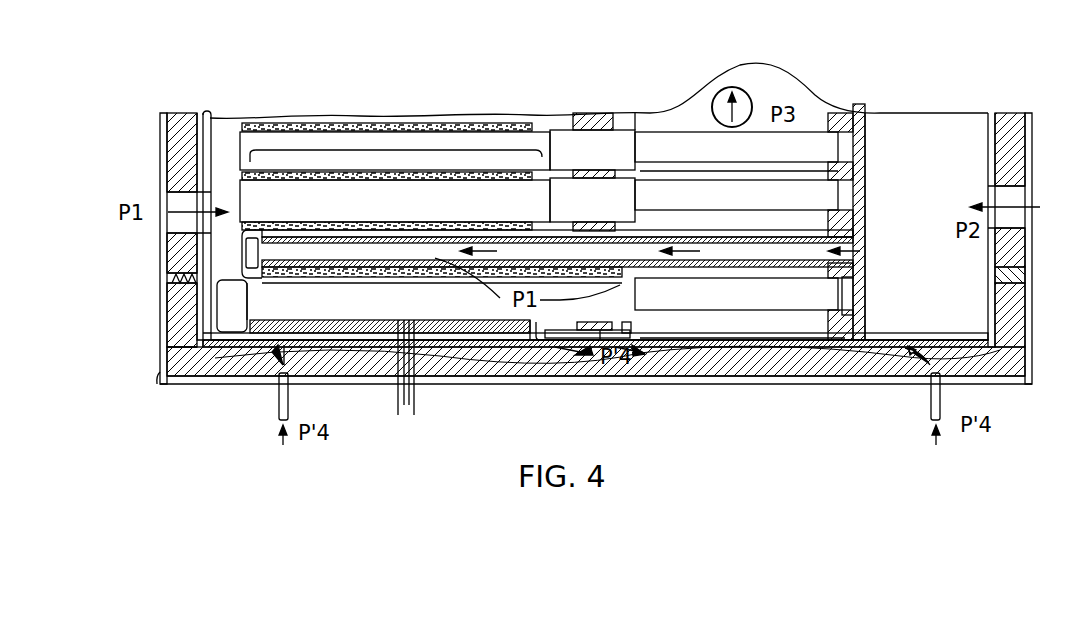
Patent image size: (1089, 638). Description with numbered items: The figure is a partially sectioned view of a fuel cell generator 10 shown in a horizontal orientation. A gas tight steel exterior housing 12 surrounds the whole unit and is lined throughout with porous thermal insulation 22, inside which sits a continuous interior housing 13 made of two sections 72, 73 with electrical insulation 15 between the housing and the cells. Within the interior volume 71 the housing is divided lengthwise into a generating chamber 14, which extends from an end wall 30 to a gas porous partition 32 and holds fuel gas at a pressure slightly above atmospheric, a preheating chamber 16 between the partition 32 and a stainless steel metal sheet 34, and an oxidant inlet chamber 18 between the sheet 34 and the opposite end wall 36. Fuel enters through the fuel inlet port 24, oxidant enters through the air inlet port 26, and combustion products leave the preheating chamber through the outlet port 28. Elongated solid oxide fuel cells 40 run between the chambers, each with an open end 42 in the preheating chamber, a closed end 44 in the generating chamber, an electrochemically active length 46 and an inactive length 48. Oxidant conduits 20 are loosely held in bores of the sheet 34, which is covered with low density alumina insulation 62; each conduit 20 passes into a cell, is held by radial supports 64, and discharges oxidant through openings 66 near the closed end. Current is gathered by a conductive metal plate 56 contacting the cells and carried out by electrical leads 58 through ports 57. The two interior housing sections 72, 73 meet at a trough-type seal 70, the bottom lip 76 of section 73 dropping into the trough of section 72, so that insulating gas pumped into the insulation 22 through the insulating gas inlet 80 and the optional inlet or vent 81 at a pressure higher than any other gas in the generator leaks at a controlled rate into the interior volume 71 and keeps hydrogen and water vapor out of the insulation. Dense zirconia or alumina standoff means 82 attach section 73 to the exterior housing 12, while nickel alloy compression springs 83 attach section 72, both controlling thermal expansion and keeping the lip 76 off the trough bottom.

The fuel cell generator 10 is at (628, 49).
The exterior housing 12 is at (163, 113).
The interior housing 13 is at (200, 113).
The generating chamber 14 is at (372, 123).
The electrical insulation 15 is at (210, 116).
The preheating chamber 16 is at (700, 132).
The oxidant inlet chamber 18 is at (927, 142).
The oxidant conduits 20 is at (765, 160).
The thermal insulation 22 is at (183, 113).
The fuel inlet port 24 is at (205, 202).
The air inlet port 26 is at (985, 196).
The combustion product outlet port 28 is at (720, 92).
The end wall 30 is at (170, 262).
The gas porous partition 32 is at (590, 117).
The metal sheet 34 is at (866, 268).
The end wall 36 is at (1005, 305).
The fuel cells 40 is at (423, 306).
The open ends 42 is at (642, 114).
The closed ends 44 is at (240, 150).
The electrochemically active length 46 is at (395, 150).
The inactive length 48 is at (560, 140).
The conductive metal plate 56 is at (330, 326).
The ports for electrical leads 57 is at (418, 395).
The electrical leads 58 is at (400, 405).
The insulation 62 is at (842, 300).
The radial supports 64 is at (298, 265).
The openings 66 is at (252, 252).
The seal 70 is at (620, 333).
The interior volume 71 is at (553, 209).
The interior housing section 72 is at (492, 332).
The interior housing section 73 is at (700, 338).
The bottom lip 76 is at (232, 290).
The insulating gas inlet 80 is at (290, 400).
The insulating gas inlet or top vent outlet 81 is at (930, 400).
The standoff means 82 is at (1025, 275).
The compression springs 83 is at (180, 280).